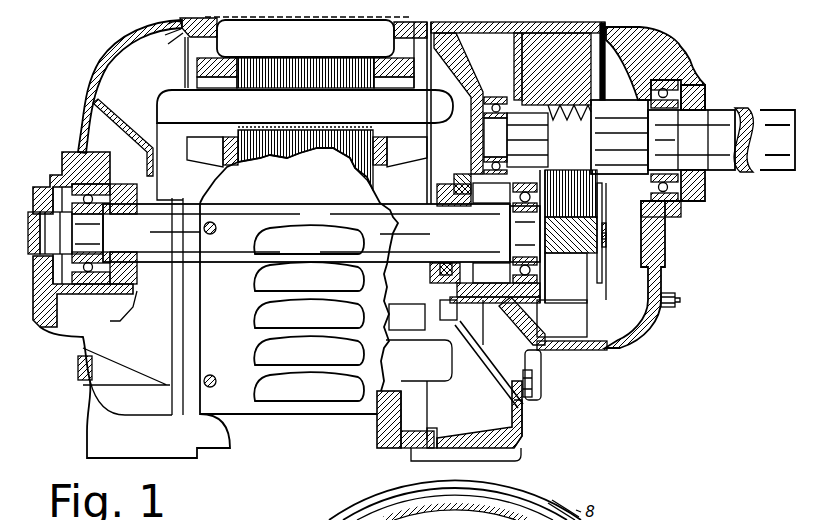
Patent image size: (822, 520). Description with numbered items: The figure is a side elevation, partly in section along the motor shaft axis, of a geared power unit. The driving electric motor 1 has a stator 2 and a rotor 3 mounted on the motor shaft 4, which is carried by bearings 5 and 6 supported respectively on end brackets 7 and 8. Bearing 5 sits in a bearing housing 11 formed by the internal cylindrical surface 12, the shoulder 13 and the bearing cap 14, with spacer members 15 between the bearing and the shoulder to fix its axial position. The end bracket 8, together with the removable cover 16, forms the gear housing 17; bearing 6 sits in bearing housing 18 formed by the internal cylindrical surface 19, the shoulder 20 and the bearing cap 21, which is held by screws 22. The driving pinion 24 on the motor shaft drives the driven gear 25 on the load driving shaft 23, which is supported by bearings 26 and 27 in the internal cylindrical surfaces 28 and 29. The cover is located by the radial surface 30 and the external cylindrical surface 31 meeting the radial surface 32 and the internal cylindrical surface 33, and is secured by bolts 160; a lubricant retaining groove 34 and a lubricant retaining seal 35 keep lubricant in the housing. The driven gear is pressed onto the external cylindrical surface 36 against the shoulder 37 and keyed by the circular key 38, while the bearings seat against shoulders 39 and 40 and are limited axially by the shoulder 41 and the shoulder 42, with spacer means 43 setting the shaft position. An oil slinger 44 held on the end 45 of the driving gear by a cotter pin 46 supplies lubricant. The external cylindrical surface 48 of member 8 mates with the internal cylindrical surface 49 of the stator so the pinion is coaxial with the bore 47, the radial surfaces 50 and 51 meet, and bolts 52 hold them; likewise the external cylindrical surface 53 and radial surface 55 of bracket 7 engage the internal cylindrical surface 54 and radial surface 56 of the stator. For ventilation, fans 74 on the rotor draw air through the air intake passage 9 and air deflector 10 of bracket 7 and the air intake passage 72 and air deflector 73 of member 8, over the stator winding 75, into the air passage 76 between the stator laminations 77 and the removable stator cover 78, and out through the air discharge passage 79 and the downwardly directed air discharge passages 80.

The driving electric motor 1 is at (88, 440).
The stator 2 is at (378, 420).
The rotor 3 is at (290, 152).
The motor shaft 4 is at (396, 212).
The bearing 5 is at (86, 290).
The bearing 6 is at (510, 220).
The end bracket 7 is at (86, 79).
The end bracket 8 is at (525, 414).
The air intake passage 9 is at (58, 332).
The air deflector 10 is at (135, 138).
The bearing housing 11 is at (42, 190).
The internal cylindrical surface 12 is at (95, 178).
The shoulder 13 is at (62, 166).
The bearing cap 14 is at (114, 288).
The spacer members 15 is at (70, 291).
The removable cover 16 is at (664, 262).
The gear housing 17 is at (616, 306).
The bearing housing 18 is at (494, 304).
The internal cylindrical surface 19 is at (511, 352).
The shoulder 20 is at (540, 282).
The bearing cap 21 is at (448, 285).
The screws 22 is at (562, 318).
The load driving shaft 23 is at (726, 168).
The driving pinion 24 is at (556, 252).
The driven gear 25 is at (603, 205).
The bearing 26 is at (491, 193).
The bearing 27 is at (692, 71).
The internal cylindrical surface 28 is at (500, 88).
The internal cylindrical surface 29 is at (668, 224).
The radial surface 30 is at (628, 343).
The external cylindrical surface 31 is at (605, 40).
The radial surface 32 is at (590, 351).
The internal cylindrical surface 33 is at (620, 25).
The lubricant retaining groove 34 is at (702, 190).
The lubricant retaining seal 35 is at (440, 270).
The external cylindrical surface 36 is at (621, 132).
The shoulder 37 is at (598, 110).
The circular key 38 is at (549, 93).
The shoulder 39 is at (546, 152).
The shoulder 40 is at (645, 170).
The shoulder 41 is at (468, 96).
The shoulder 42 is at (680, 90).
The spacer means 43 is at (688, 204).
The oil slinger 44 is at (607, 283).
The end of the driving gear 45 is at (607, 230).
The cotter pin 46 is at (606, 242).
The bore 47 is at (322, 128).
The external cylindrical surface 48 is at (450, 436).
The internal cylindrical surface 49 is at (430, 448).
The radial surface 50 is at (434, 436).
The radial surface 51 is at (400, 448).
The bolts 52 is at (535, 385).
The external cylindrical surface 53 is at (176, 38).
The internal cylindrical surface 54 is at (168, 24).
The radial surface 55 is at (180, 44).
The radial surface 56 is at (219, 26).
The air intake passage 72 is at (530, 362).
The air deflector 73 is at (475, 352).
The fans 74 is at (418, 165).
The stator winding 75 is at (158, 96).
The air passage 76 is at (348, 44).
The stator laminations 77 is at (308, 113).
The removable stator cover 78 is at (264, 418).
The air discharge passage 79 is at (305, 424).
The air discharge passages 80 is at (258, 292).
The bolts 160 is at (681, 300).